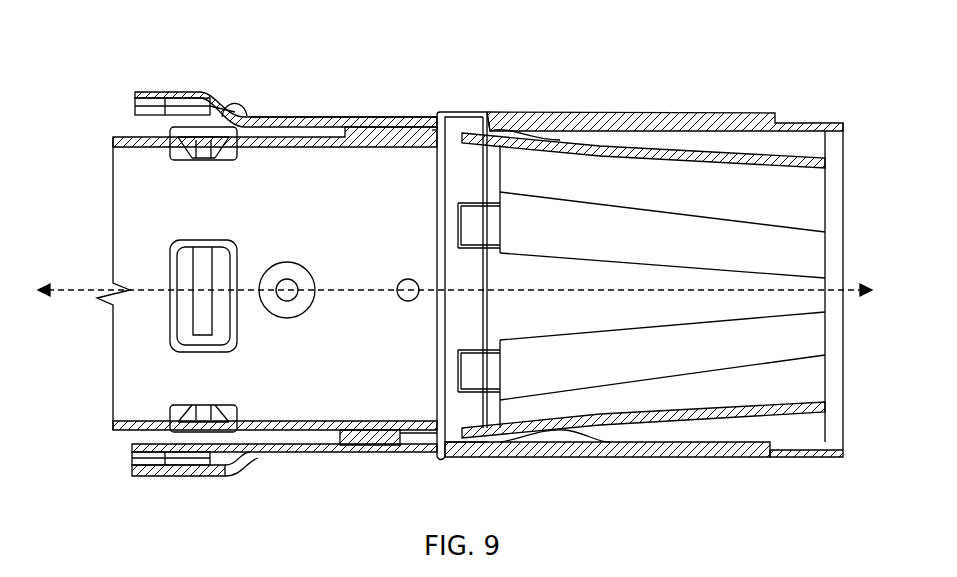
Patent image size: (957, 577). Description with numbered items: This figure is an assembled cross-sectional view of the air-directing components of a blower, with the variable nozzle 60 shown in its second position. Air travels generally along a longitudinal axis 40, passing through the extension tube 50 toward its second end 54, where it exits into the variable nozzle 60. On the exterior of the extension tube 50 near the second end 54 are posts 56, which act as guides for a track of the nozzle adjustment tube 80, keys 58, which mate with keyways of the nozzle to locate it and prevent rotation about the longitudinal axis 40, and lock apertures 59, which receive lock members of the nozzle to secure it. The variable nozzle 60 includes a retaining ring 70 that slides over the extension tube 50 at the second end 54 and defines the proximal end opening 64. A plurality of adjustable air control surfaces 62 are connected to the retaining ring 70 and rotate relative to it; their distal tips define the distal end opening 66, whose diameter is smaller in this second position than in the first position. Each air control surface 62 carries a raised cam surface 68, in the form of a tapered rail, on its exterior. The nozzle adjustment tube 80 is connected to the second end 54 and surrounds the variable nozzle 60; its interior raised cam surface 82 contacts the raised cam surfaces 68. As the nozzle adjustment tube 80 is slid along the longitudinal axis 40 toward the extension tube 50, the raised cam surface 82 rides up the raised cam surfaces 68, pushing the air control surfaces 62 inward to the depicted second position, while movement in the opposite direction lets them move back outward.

The longitudinal axis 40 is at (87, 292).
The extension tube 50 is at (98, 138).
The second end 54 is at (432, 127).
The post 56 is at (287, 322).
The key 58 is at (372, 130).
The lock aperture 59 is at (406, 305).
The variable nozzle 60 is at (643, 116).
The adjustable air control surface 62 is at (755, 200).
The proximal end opening 64 is at (433, 232).
The distal end opening 66 is at (846, 245).
The raised cam surface 68 is at (570, 135).
The retaining ring 70 is at (455, 120).
The nozzle adjustment tube 80 is at (281, 115).
The raised cam surface 82 is at (543, 120).